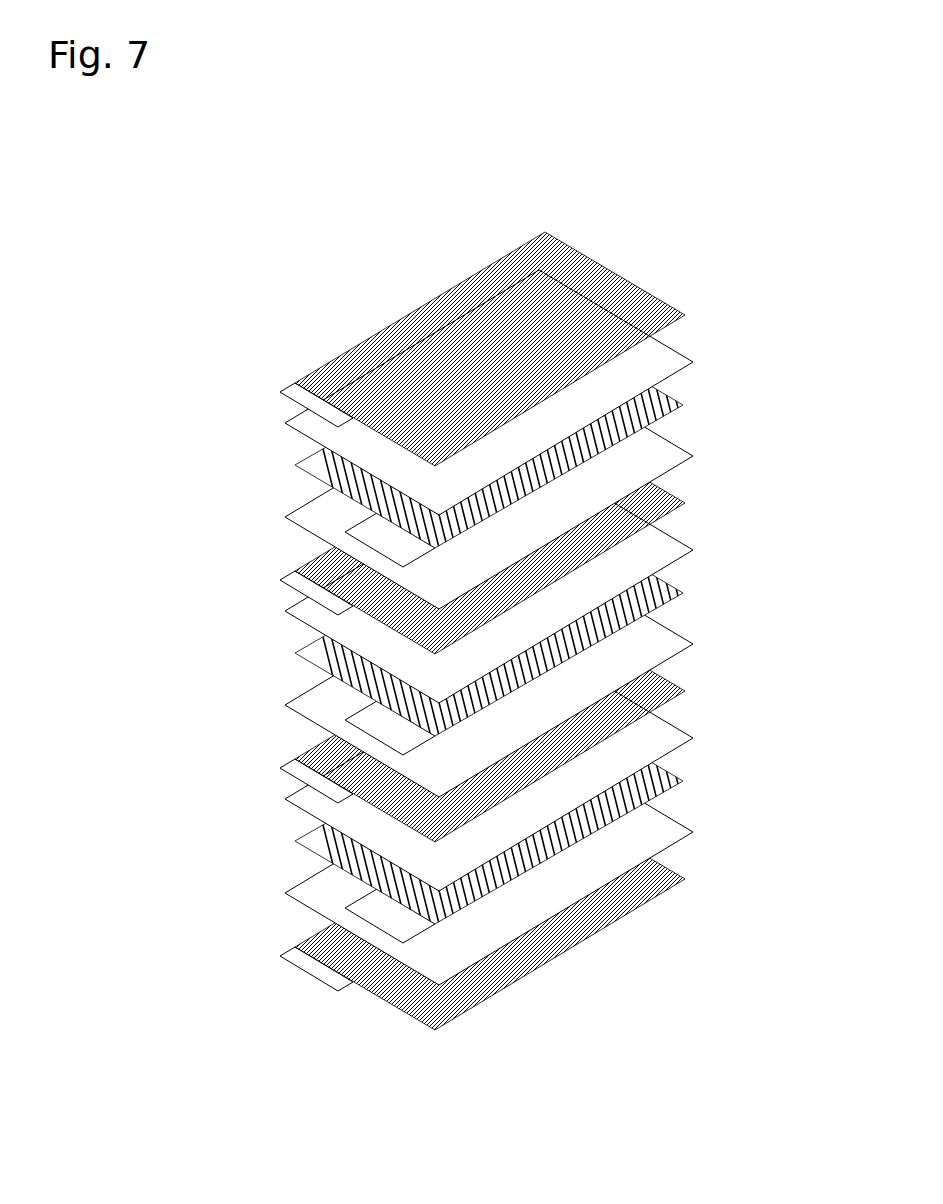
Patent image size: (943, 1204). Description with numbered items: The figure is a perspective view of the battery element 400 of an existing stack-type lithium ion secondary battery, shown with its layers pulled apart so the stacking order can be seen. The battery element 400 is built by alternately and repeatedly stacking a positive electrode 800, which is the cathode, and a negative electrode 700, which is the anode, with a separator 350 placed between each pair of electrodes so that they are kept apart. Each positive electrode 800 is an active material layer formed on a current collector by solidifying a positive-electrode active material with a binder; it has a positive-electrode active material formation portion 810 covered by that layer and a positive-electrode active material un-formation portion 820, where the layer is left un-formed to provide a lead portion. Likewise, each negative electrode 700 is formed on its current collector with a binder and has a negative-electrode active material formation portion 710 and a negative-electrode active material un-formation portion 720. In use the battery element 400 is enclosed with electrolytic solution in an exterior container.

The battery element 400 is at (740, 194).
The negative electrode 700 is at (128, 265).
The negative-electrode active material formation portion 710 is at (345, 358).
The negative-electrode active material un-formation portion 720 is at (297, 392).
The positive electrode 800 is at (128, 405).
The positive-electrode active material formation portion 810 is at (328, 477).
The positive-electrode active material un-formation portion 820 is at (368, 527).
The separator 350 is at (668, 452).